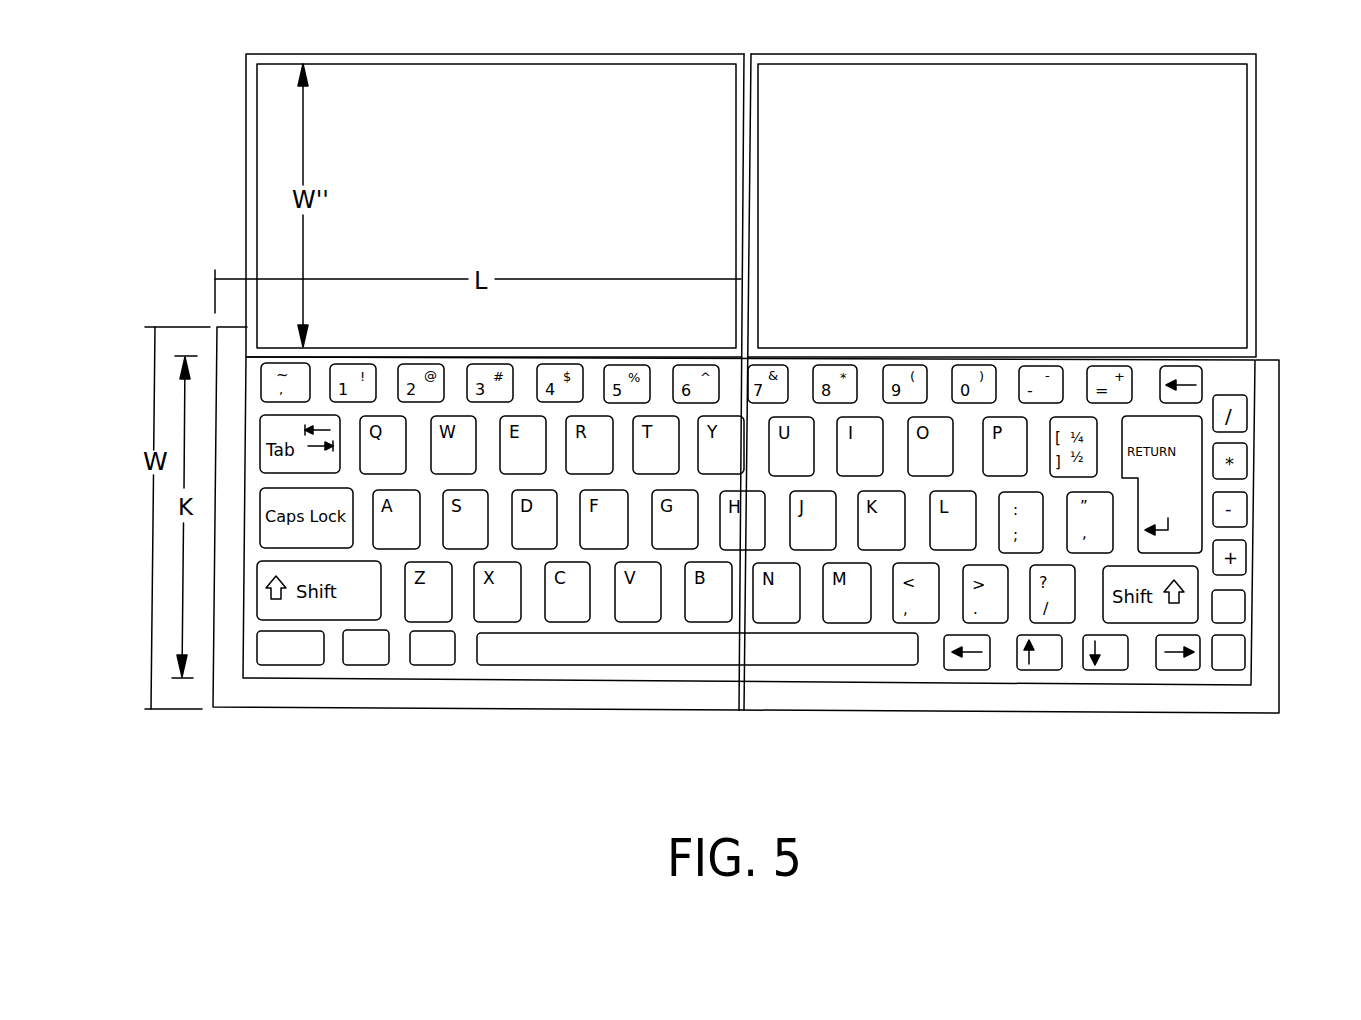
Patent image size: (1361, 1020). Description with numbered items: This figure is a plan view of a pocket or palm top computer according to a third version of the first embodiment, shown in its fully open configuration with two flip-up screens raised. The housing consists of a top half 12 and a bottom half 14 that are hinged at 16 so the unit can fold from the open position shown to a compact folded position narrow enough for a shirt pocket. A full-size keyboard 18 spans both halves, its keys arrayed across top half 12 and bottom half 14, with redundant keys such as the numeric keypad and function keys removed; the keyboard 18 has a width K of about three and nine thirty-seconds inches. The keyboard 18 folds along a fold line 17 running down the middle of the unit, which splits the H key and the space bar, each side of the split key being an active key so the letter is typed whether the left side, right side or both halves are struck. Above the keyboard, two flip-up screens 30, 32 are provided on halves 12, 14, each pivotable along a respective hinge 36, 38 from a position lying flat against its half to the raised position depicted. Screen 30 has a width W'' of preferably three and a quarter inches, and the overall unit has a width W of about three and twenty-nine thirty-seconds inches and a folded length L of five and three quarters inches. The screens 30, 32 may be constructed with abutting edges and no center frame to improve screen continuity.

The top half 12 is at (505, 697).
The bottom half 14 is at (1073, 703).
The hinge 16 is at (733, 728).
The fold line 17 is at (741, 633).
The keyboard 18 is at (333, 662).
The flip up screen 30 is at (556, 183).
The flip up screen 32 is at (1006, 183).
The hinge 36 is at (1256, 361).
The hinge 38 is at (245, 357).